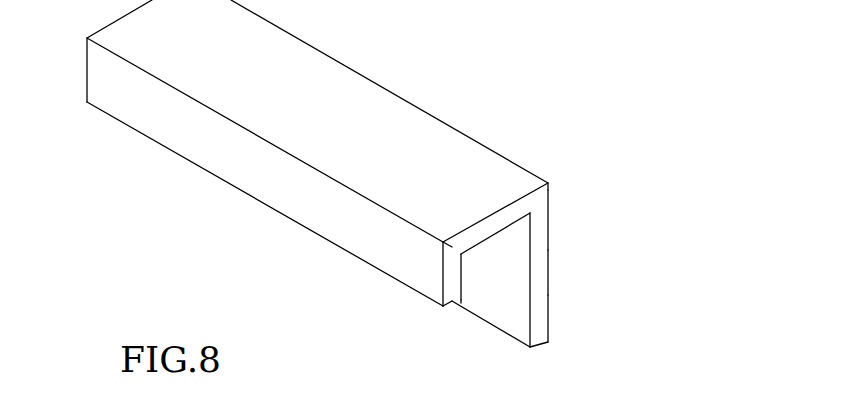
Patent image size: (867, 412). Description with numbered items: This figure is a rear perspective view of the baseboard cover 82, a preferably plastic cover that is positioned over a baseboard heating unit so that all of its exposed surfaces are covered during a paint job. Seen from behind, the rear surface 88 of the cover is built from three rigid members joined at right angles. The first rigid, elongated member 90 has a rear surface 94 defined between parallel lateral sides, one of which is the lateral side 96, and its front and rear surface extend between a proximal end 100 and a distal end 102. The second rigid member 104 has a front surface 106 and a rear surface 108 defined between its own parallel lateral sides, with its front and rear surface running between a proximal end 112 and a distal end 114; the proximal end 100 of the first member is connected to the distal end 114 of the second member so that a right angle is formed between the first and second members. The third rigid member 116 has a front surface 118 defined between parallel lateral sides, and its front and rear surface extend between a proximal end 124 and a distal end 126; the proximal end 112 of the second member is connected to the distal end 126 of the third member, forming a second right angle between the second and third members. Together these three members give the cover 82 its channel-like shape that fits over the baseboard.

The baseboard cover 82 is at (282, 244).
The rear surface 88 is at (204, 208).
The first rigid, elongated member 90 is at (548, 310).
The rear surface 94 is at (499, 274).
The lateral side 96 is at (540, 260).
The proximal end 100 is at (540, 203).
The distal end 102 is at (540, 338).
The second rigid member 104 is at (493, 222).
The front surface 106 is at (365, 123).
The rear surface 108 is at (533, 349).
The proximal end 112 is at (453, 255).
The distal end 114 is at (535, 192).
The third rigid member 116 is at (453, 298).
The front surface 118 is at (110, 78).
The proximal end 124 is at (457, 312).
The distal end 126 is at (457, 277).